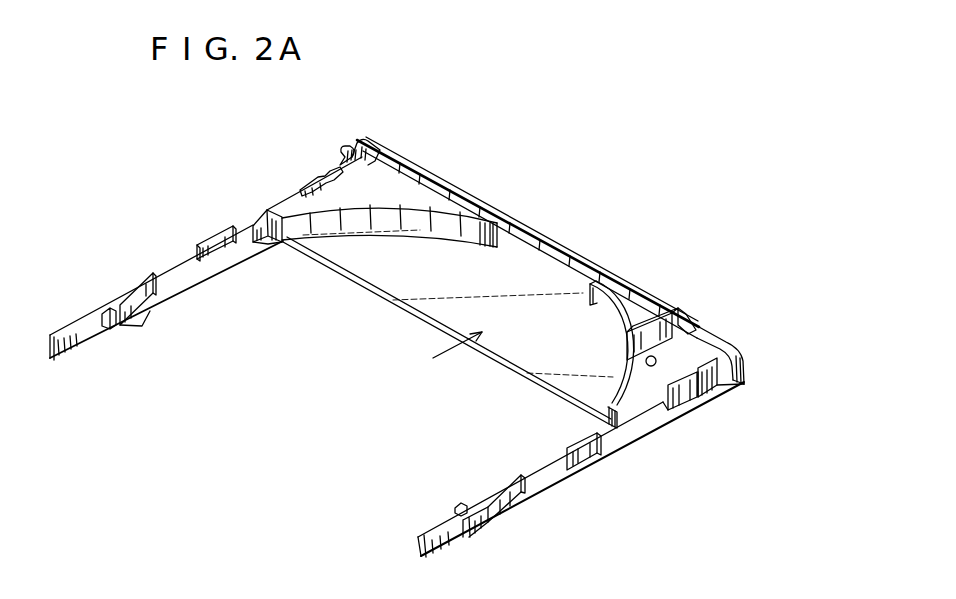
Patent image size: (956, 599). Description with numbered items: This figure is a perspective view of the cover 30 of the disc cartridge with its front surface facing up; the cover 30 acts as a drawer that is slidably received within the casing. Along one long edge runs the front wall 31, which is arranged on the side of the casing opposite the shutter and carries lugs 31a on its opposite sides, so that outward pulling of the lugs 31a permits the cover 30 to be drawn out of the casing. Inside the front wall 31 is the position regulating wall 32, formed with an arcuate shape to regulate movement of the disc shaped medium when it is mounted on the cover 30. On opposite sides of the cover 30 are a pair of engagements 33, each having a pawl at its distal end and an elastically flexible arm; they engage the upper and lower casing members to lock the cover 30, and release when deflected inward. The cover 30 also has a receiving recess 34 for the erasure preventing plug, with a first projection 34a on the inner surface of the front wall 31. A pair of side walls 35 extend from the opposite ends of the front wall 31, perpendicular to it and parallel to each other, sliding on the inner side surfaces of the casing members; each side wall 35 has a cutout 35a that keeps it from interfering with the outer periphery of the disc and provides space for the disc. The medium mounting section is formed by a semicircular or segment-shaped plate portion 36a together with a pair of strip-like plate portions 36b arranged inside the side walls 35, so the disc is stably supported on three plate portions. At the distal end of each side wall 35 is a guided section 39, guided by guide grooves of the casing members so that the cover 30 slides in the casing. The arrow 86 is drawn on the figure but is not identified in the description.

The cover 30 is at (447, 170).
The front wall 31 is at (560, 253).
The lug 31a is at (355, 142).
The position regulating wall 32 is at (418, 232).
The engagement 33 is at (313, 168).
The receiving recess 34 is at (640, 330).
The first projection 34a is at (685, 323).
The side wall 35 is at (132, 287).
The cutout 35a is at (180, 263).
The plate portion 36a is at (417, 308).
The strip-like plate portion 36b is at (187, 297).
The guided section 39 is at (85, 340).
The insertion direction 86 is at (437, 350).